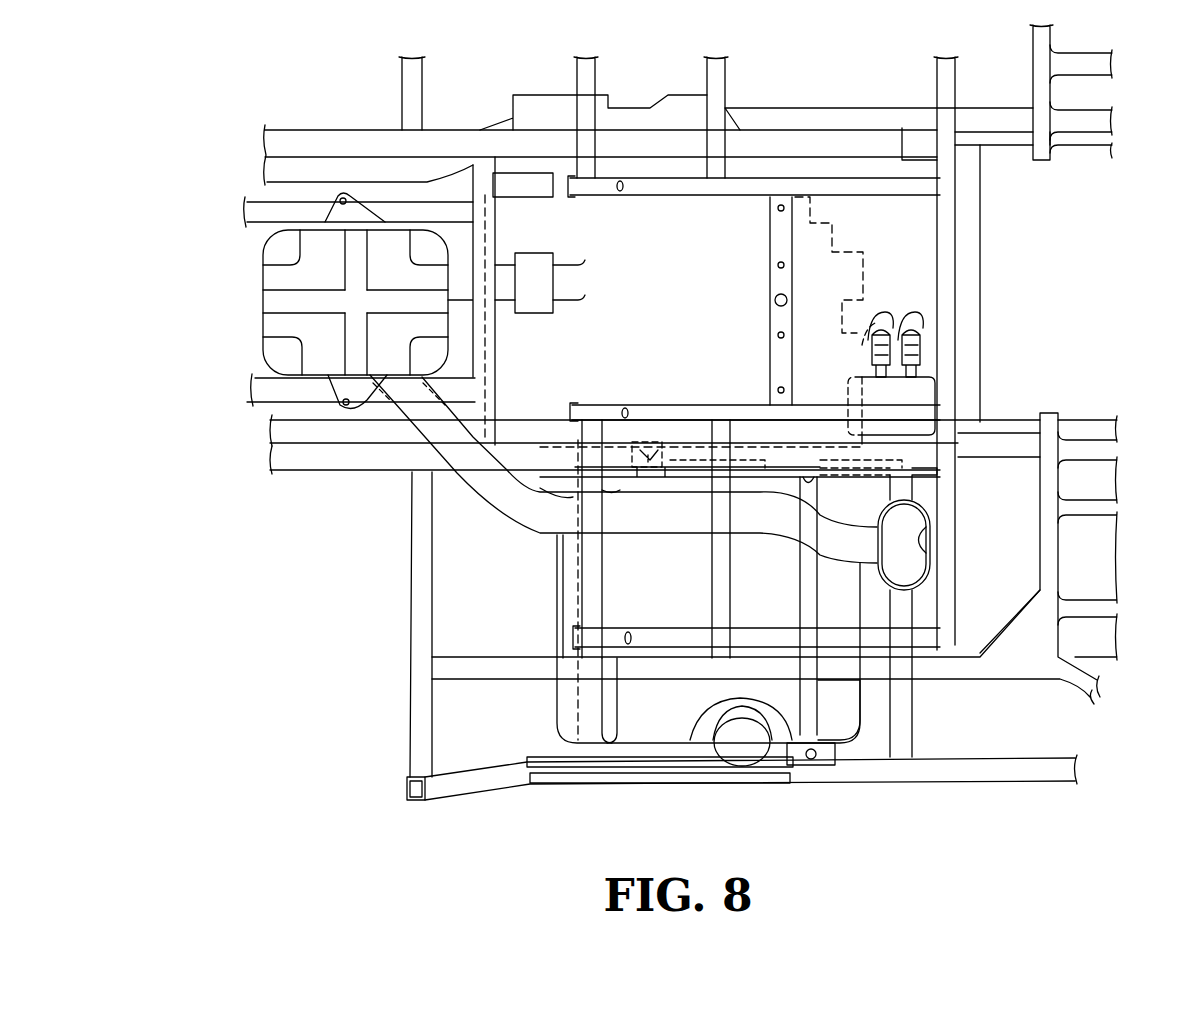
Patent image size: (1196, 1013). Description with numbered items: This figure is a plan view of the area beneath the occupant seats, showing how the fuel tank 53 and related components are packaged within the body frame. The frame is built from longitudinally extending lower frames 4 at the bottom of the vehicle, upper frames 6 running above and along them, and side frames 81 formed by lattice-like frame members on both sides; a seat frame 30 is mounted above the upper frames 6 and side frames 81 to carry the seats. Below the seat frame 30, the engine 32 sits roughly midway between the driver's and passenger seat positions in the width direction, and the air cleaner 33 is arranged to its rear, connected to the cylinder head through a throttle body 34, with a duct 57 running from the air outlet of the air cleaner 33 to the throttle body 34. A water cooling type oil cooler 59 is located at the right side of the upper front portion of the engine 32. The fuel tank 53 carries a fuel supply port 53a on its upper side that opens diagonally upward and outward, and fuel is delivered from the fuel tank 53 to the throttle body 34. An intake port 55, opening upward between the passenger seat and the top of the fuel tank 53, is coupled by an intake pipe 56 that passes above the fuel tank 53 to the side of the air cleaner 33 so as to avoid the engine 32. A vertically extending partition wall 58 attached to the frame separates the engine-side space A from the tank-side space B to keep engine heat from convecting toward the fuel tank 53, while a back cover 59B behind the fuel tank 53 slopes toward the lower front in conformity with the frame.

The duct 57 is at (463, 280).
The throttle body 34 is at (530, 267).
The engine 32 is at (627, 278).
The seat frame 30 is at (948, 247).
The space A is at (913, 307).
The space B is at (868, 490).
The oil cooler 59 is at (920, 393).
The partition wall 58 is at (923, 478).
The intake port 55 is at (913, 527).
The air cleaner 33 is at (270, 330).
The lower frame 4 is at (297, 432).
The upper frame 6 is at (350, 456).
The intake pipe 56 is at (493, 497).
The back cover 59B is at (465, 730).
The side frame 81 is at (522, 783).
The fuel tank 53 is at (667, 718).
The fuel supply port 53a is at (745, 748).